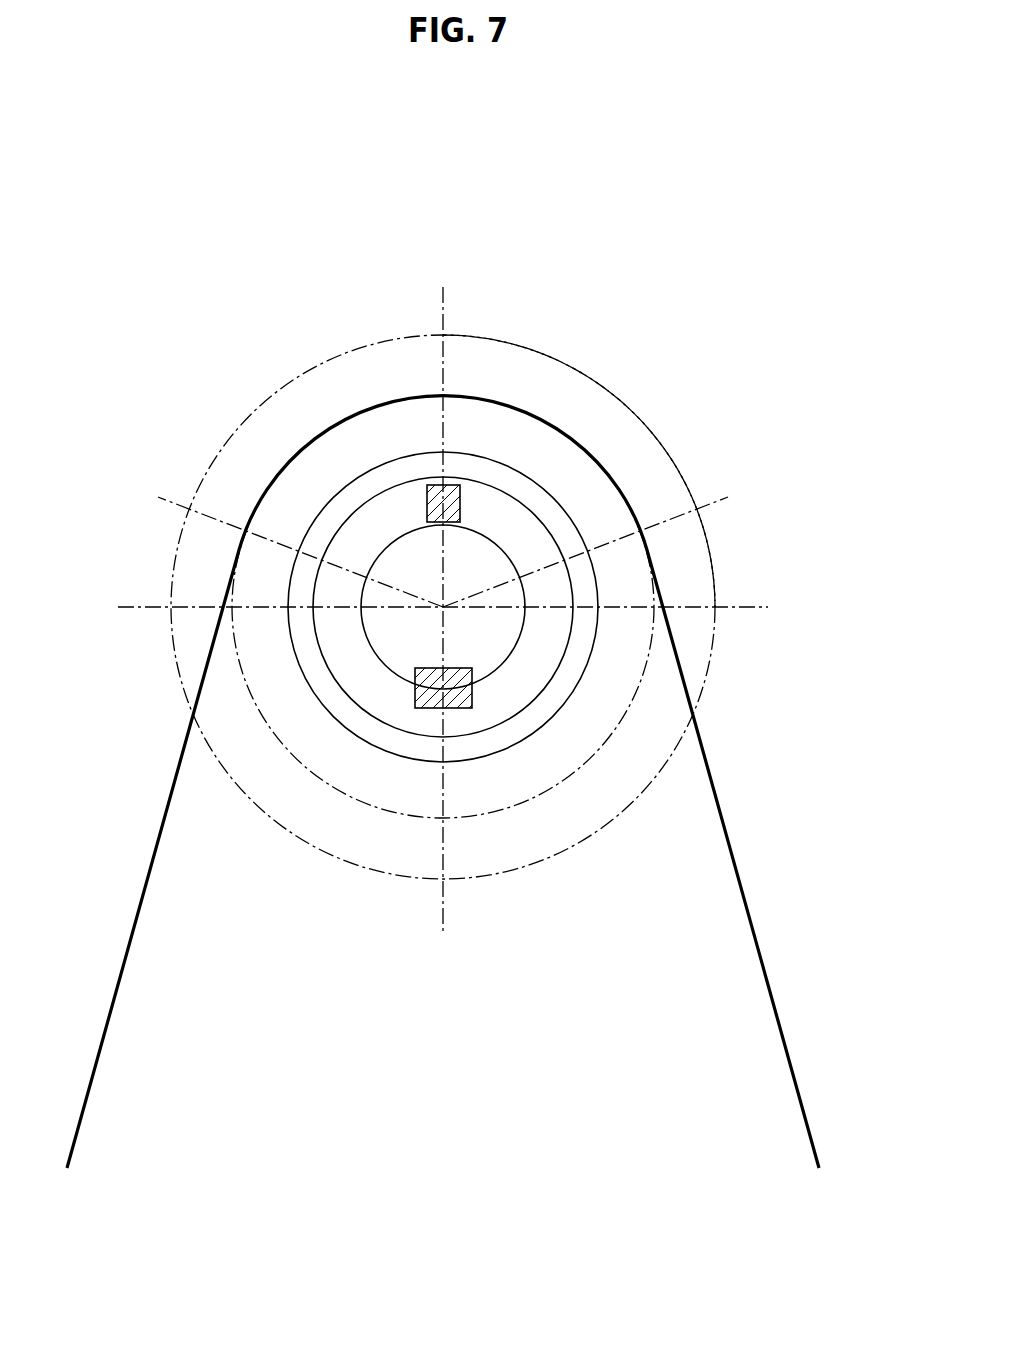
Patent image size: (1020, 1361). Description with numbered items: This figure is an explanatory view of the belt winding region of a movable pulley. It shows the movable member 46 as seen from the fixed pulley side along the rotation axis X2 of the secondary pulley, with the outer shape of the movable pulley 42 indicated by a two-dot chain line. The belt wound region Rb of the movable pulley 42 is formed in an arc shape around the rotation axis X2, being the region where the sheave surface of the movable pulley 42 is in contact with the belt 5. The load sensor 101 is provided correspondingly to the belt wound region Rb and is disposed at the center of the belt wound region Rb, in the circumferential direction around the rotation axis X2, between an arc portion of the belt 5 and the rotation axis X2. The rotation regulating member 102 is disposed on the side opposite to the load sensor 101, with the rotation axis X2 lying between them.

The belt 5 is at (127, 950).
The movable pulley 42 is at (710, 552).
The belt wound region Rb is at (642, 473).
The movable member 46 is at (562, 710).
The load sensor 101 is at (458, 500).
The rotation regulating member 102 is at (427, 695).
The rotation axis X2 is at (443, 607).